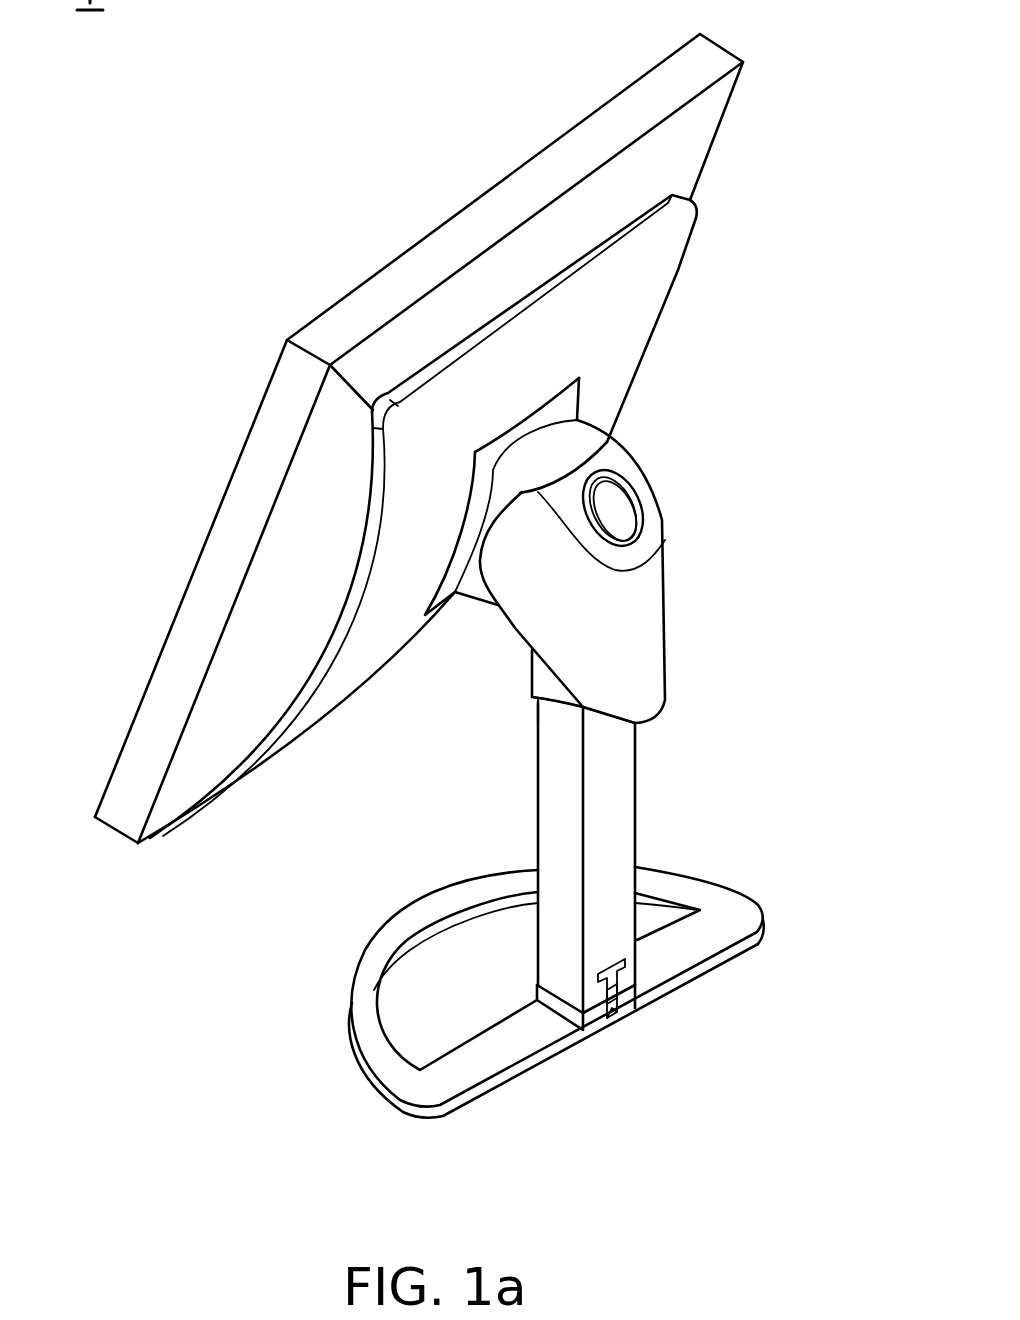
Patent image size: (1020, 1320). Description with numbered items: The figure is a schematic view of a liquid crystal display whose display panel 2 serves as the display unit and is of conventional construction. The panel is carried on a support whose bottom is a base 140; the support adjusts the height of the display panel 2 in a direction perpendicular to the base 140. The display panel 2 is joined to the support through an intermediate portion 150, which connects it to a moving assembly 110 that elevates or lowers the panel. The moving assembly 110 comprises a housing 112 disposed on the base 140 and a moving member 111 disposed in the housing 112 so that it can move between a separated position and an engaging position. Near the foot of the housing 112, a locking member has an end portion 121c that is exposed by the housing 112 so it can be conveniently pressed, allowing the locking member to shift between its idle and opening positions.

The display panel 2 is at (263, 483).
The moving assembly 110 is at (491, 852).
The moving member 111 is at (550, 680).
The housing 112 is at (548, 835).
The base 140 is at (730, 920).
The intermediate portion 150 is at (635, 635).
The end portion 121c is at (627, 1007).